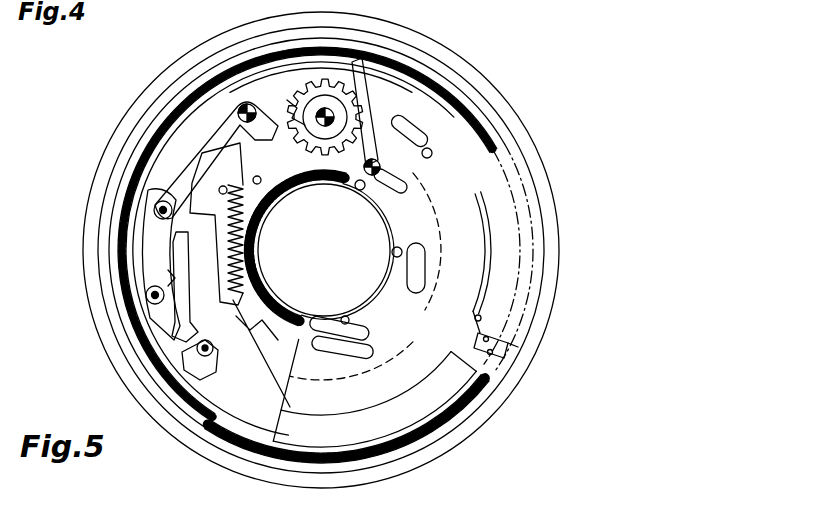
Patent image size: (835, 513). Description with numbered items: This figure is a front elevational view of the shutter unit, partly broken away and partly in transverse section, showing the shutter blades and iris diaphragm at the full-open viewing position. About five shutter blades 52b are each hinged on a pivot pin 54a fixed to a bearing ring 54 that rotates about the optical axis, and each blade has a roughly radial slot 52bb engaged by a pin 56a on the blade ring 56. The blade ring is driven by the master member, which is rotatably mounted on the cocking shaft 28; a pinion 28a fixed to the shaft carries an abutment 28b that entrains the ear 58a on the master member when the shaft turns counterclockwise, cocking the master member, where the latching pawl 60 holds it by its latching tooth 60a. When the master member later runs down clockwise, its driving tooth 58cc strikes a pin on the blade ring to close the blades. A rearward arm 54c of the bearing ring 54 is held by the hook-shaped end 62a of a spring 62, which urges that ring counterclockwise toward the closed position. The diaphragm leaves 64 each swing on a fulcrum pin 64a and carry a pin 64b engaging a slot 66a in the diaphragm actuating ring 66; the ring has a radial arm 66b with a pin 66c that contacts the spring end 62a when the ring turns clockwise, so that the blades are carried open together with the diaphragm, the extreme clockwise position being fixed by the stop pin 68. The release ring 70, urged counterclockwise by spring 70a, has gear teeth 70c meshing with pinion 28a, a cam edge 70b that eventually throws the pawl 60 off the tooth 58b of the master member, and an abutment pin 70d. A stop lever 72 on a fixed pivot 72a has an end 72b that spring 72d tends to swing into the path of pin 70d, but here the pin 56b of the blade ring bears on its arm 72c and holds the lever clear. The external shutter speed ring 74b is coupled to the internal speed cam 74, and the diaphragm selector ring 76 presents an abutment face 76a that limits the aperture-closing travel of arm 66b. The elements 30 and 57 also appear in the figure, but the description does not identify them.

The cocking shaft 28 is at (343, 108).
The pinion 28a is at (370, 44).
The abutment 28b is at (310, 85).
The pinion gear 30 is at (327, 100).
The shutter blades 52b is at (440, 213).
The slot 52bb is at (420, 167).
The bearing ring 54 is at (423, 373).
The pivot pin 54a is at (378, 246).
The rearwardly extending arm 54c is at (478, 318).
The blade ring 56 is at (268, 340).
The pin 56a is at (467, 160).
The pin 56b is at (213, 370).
The drum 57 is at (262, 260).
The ear 58a is at (287, 100).
The tooth 58b is at (333, 170).
The driving tooth 58cc is at (293, 110).
The latching pawl 60 is at (223, 142).
The latching tooth 60a is at (287, 140).
The spring 62 is at (493, 265).
The hook-shaped end 62a is at (483, 360).
The diaphragm leaves 64 is at (402, 343).
The fulcrum pin 64a is at (330, 323).
The pin 64b is at (382, 360).
The diaphragm actuating ring 66 is at (330, 387).
The slot 66a is at (363, 337).
The radial arm 66b is at (507, 350).
The pin 66c is at (507, 333).
The stop pin 68 is at (513, 370).
The release ring 70 is at (223, 228).
The spring 70a is at (257, 257).
The cam edge 70b is at (232, 188).
The gear teeth 70c is at (412, 120).
The abutment pin 70d is at (270, 178).
The stop lever 72 is at (195, 317).
The fixed pivot 72a is at (212, 368).
The lever end 72b is at (178, 244).
The arm 72c is at (282, 280).
The spring 72d is at (172, 282).
The shutter speed control cam 74 is at (130, 340).
The shutter speed control ring 74b is at (163, 133).
The diaphragm selector control ring 76 is at (473, 393).
The abutment face 76a is at (497, 150).